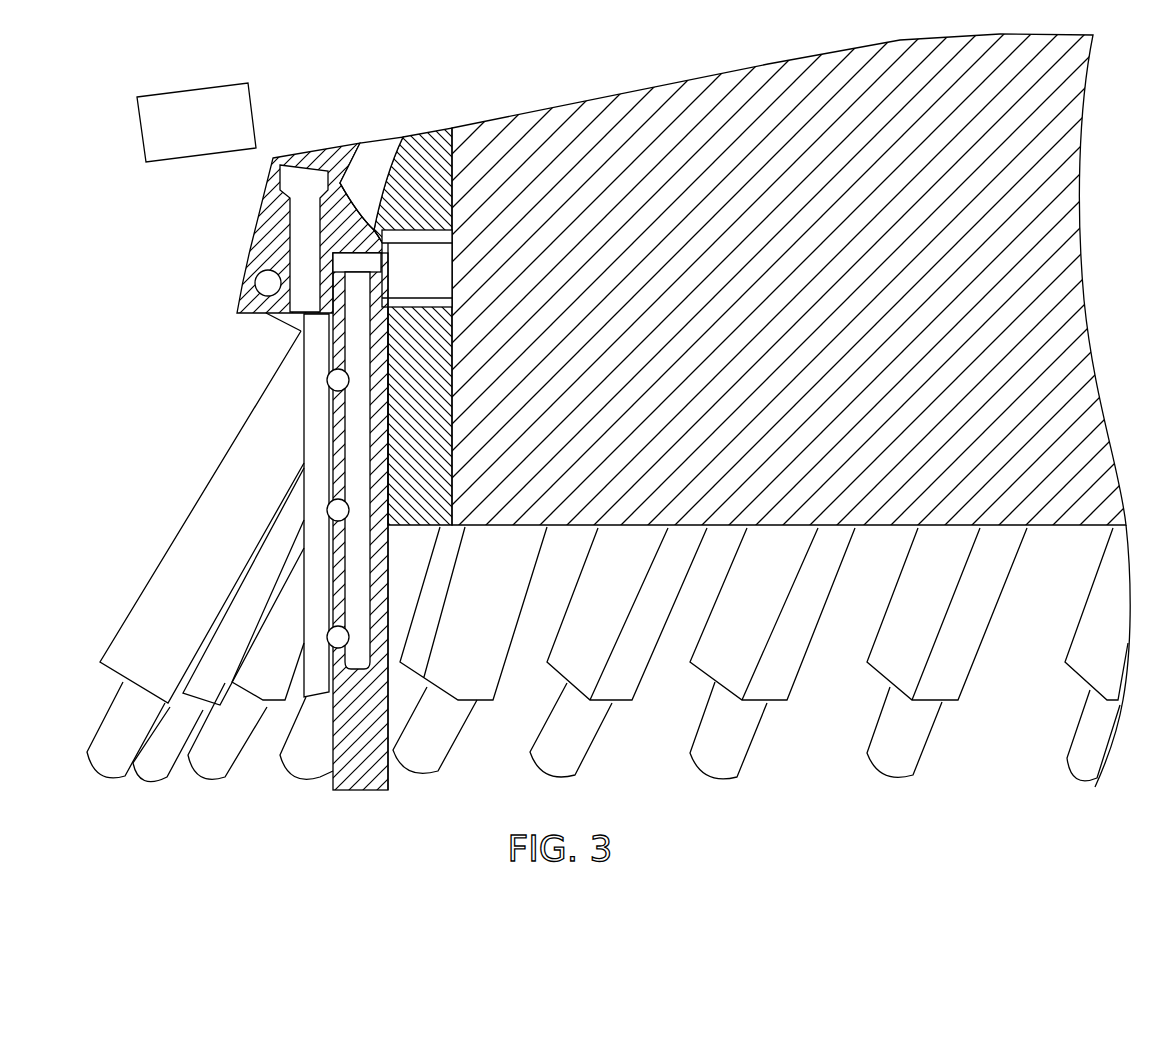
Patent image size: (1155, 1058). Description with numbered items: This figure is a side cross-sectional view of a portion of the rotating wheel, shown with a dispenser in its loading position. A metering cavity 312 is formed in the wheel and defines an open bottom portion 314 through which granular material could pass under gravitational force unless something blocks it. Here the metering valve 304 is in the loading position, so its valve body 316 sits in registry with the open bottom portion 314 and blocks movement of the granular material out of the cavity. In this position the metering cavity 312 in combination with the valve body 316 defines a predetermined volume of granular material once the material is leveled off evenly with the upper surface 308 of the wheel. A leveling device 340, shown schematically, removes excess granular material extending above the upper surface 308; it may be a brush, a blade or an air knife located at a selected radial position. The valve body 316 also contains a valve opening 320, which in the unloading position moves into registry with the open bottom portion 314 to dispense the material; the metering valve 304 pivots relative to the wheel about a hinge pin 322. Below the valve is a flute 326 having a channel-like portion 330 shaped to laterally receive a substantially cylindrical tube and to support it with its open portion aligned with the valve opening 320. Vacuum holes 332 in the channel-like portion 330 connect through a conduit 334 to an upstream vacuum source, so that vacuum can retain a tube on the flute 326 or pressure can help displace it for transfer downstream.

The metering valve 304 is at (239, 203).
The upper surface 308 is at (768, 63).
The metering cavity 312 is at (413, 140).
The open bottom portion 314 is at (358, 178).
The valve body 316 is at (363, 195).
The valve opening 320 is at (304, 232).
The hinge pin 322 is at (264, 285).
The flute 326 is at (352, 793).
The channel-like portion 330 is at (316, 433).
The vacuum hole 332 is at (328, 382).
The conduit 334 is at (428, 262).
The leveling device 340 is at (204, 102).